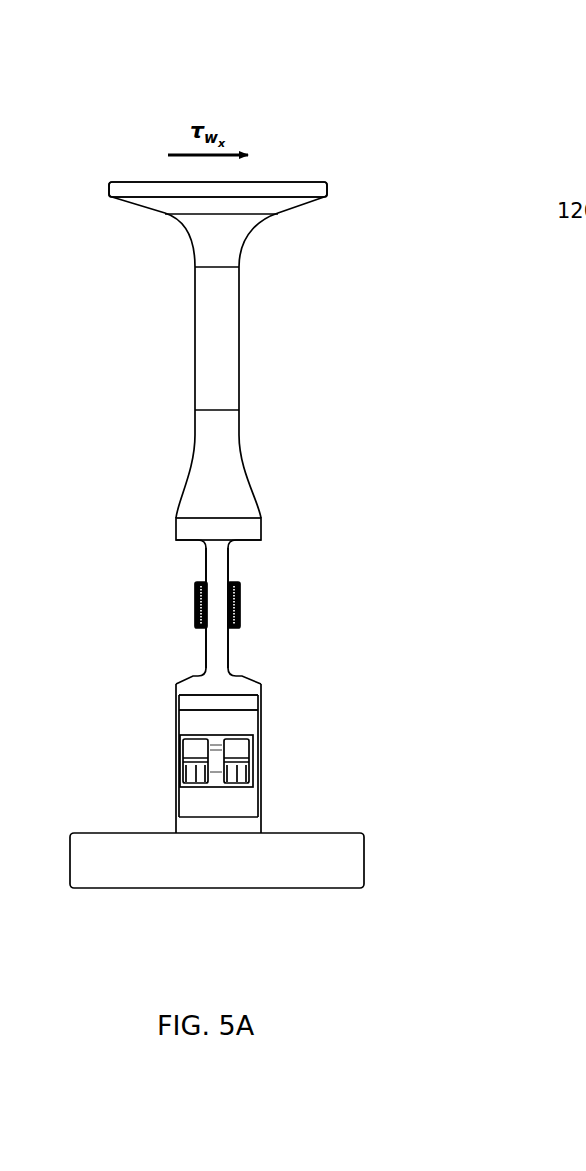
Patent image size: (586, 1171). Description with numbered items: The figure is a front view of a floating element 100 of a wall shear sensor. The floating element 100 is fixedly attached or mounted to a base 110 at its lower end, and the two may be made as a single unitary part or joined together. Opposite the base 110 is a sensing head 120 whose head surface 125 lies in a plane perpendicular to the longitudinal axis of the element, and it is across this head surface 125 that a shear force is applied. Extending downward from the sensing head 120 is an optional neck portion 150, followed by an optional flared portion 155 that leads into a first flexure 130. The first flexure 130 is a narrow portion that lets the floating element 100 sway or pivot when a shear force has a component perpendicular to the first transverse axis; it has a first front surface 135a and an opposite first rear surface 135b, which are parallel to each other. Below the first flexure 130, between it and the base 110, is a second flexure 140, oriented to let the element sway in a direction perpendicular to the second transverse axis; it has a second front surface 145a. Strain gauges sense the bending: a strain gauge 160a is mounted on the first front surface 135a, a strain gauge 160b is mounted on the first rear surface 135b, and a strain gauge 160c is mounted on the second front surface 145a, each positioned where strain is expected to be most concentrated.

The floating element 100 is at (272, 138).
The base 110 is at (303, 832).
The sensing head 120 is at (108, 191).
The head surface 125 is at (158, 181).
The first flexure 130 is at (216, 648).
The first front surface 135a is at (230, 561).
The first rear surface 135b is at (204, 562).
The second flexure 140 is at (262, 728).
The second front surface 145a is at (196, 722).
The neck portion 150 is at (195, 325).
The flared portion 155 is at (190, 470).
The strain gauge 160a is at (240, 604).
The strain gauge 160b is at (195, 605).
The strain gauge 160c is at (198, 755).